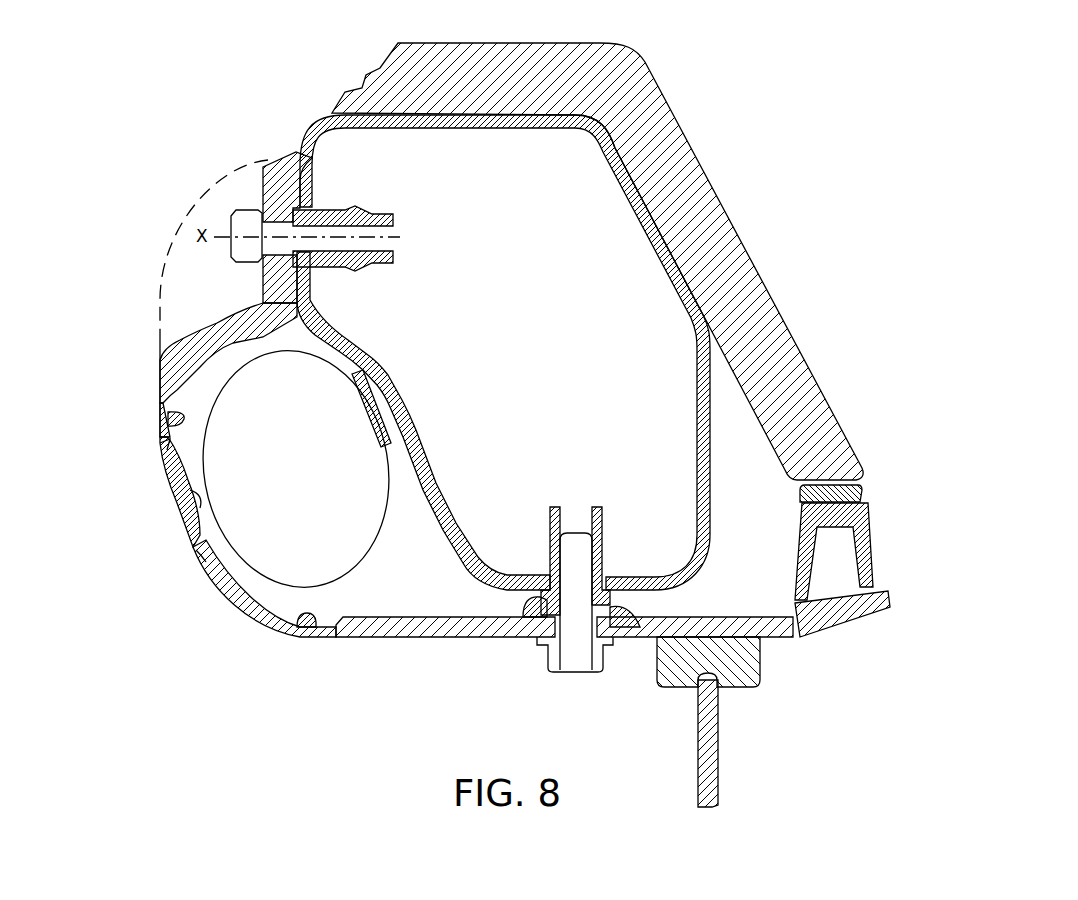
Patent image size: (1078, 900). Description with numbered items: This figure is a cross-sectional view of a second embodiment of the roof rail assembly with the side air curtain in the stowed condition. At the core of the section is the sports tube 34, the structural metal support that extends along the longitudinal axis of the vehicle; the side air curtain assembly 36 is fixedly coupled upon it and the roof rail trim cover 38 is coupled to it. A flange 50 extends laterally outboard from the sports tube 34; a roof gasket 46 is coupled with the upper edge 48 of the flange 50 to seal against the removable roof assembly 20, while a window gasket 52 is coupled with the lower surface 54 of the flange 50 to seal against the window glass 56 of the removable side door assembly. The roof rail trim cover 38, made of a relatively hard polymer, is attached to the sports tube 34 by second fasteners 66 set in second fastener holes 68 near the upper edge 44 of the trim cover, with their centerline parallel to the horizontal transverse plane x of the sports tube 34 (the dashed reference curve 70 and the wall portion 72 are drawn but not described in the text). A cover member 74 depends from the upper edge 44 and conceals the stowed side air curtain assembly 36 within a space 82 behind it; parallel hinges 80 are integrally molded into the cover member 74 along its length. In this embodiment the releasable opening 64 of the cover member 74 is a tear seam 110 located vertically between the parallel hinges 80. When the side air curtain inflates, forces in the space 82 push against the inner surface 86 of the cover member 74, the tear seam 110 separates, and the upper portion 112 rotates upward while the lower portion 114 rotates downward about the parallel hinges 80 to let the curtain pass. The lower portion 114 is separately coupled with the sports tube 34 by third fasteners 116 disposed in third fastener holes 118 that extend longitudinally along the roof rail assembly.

The removable roof assembly 20 is at (805, 388).
The sports tube 34 is at (318, 143).
The side air curtain assembly 36 is at (310, 577).
The roof rail trim cover 38 is at (183, 337).
The upper edge 44 is at (280, 160).
The roof gasket 46 is at (860, 495).
The upper edge 48 is at (865, 523).
The flange 50 is at (848, 617).
The window gasket 52 is at (737, 675).
The lower surface 54 is at (773, 637).
The window glass 56 is at (715, 780).
The releasable opening 64 is at (167, 575).
The second fasteners 66 is at (327, 222).
The second fastener holes 68 is at (350, 251).
The reference circle 70 is at (203, 205).
The side wall 72 is at (163, 373).
The cover member 74 is at (167, 462).
The parallel hinges 80 is at (180, 418).
The space 82 is at (393, 603).
The inner surface 86 is at (193, 520).
The tear seam 110 is at (195, 555).
The upper portion 112 is at (165, 452).
The lower portion 114 is at (248, 603).
The third fasteners 116 is at (577, 660).
The third fastener holes 118 is at (580, 547).